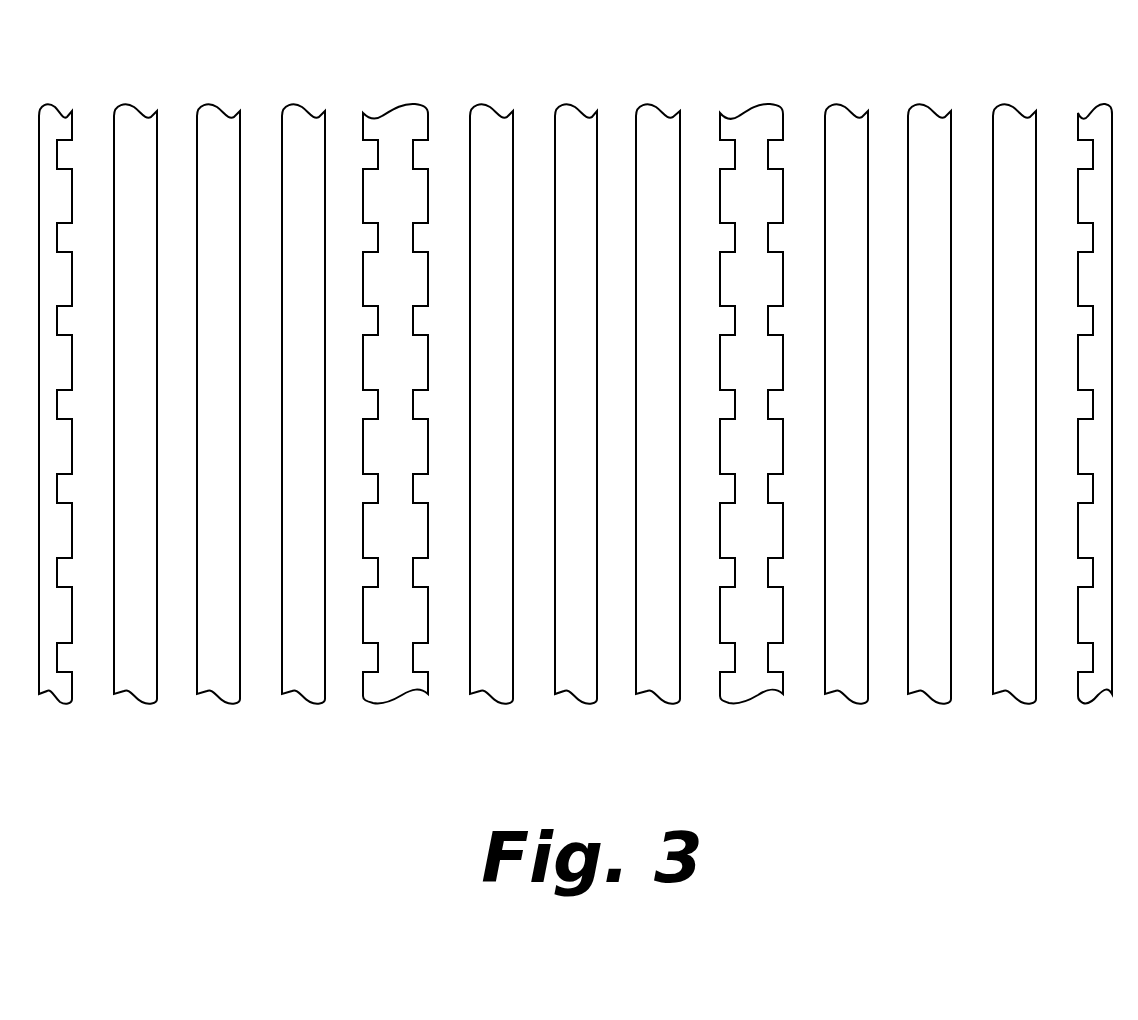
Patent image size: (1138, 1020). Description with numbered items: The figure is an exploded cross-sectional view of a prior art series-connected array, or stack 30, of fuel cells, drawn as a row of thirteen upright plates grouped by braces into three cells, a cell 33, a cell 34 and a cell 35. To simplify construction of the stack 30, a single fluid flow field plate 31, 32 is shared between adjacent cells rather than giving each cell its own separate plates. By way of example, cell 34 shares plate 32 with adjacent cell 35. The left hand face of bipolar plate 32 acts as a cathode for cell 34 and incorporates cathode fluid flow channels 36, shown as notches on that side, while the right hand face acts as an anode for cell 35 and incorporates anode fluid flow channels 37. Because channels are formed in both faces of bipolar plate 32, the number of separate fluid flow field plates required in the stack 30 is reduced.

The stack 30 is at (507, 58).
The fluid flow field plate 31 is at (395, 699).
The bipolar fluid flow field plate 32 is at (752, 700).
The first plate group 33 is at (395, 98).
The cell 34 is at (745, 100).
The cell 35 is at (1095, 102).
The cathode fluid flow channels 36 is at (727, 572).
The anode fluid flow channels 37 is at (775, 572).